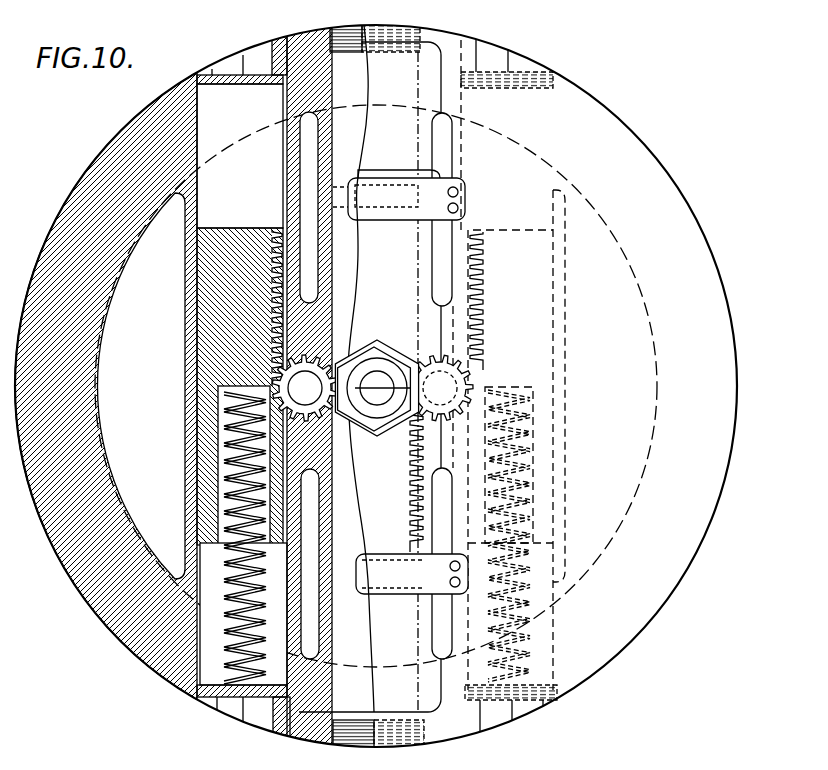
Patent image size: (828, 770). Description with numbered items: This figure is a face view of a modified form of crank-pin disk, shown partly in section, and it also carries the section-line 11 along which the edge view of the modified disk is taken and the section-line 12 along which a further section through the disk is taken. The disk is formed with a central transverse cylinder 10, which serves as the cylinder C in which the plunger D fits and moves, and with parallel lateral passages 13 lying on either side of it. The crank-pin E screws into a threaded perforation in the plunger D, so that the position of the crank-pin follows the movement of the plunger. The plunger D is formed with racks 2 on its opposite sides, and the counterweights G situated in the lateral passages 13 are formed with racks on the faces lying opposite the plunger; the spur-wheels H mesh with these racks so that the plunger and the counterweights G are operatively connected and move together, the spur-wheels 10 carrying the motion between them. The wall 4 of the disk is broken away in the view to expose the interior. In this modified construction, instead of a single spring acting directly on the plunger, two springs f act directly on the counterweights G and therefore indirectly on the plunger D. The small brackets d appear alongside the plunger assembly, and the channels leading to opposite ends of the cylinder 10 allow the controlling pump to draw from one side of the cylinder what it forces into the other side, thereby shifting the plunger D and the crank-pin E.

The section-line 11 11 is at (355, 388).
The section-line 12 12 is at (373, 125).
The parallel lateral passages 13 is at (283, 182).
The casing wall C4 4 is at (357, 290).
The central transverse cylinder 10 is at (473, 366).
The racks 2 is at (355, 572).
The cylinder C is at (370, 636).
The counterweights G is at (276, 234).
The plunger D is at (366, 656).
The crank-pin E is at (377, 398).
The spur-wheels H is at (275, 373).
The bracket d is at (344, 190).
The springs f is at (222, 572).